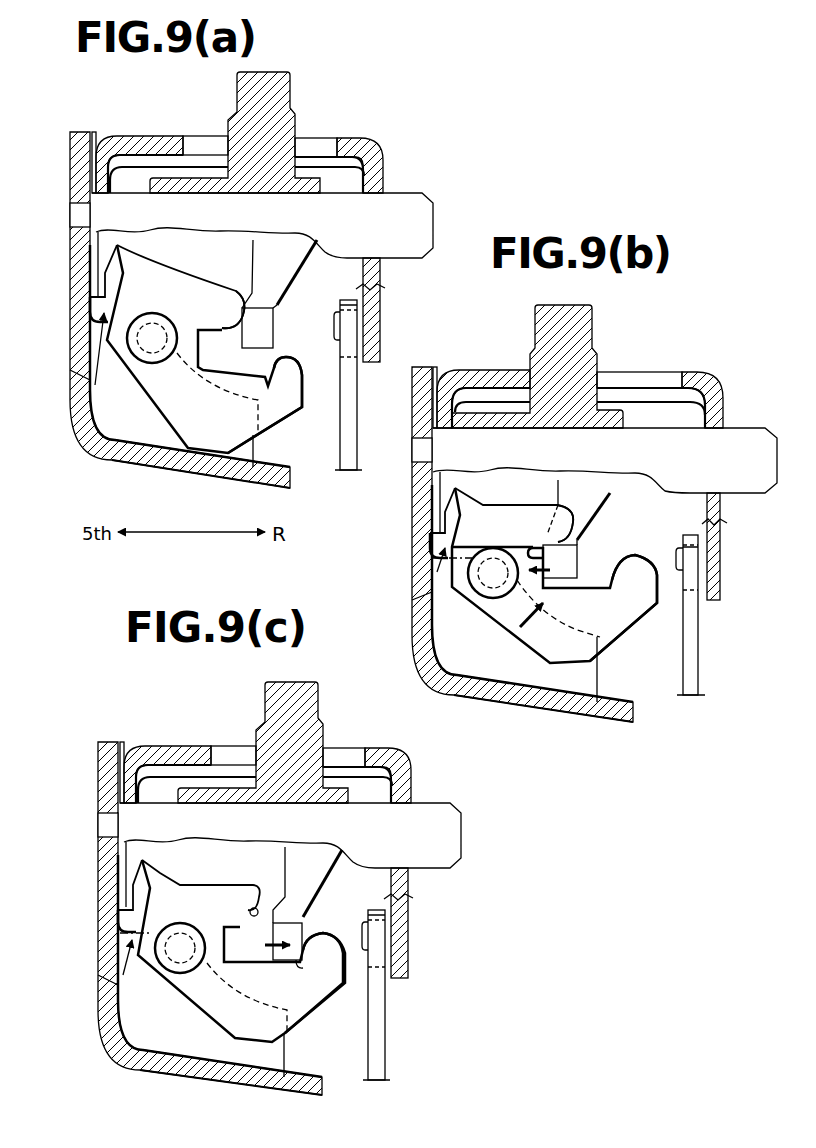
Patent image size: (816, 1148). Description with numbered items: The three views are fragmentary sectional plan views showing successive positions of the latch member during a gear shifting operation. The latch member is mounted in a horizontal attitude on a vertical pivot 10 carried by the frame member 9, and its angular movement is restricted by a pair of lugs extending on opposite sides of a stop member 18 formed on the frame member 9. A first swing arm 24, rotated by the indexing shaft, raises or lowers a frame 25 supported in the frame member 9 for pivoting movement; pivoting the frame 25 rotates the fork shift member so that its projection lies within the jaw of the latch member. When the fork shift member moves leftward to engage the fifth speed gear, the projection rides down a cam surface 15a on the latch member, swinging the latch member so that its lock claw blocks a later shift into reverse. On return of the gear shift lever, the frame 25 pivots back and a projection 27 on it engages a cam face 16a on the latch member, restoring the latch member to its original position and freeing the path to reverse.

In FIG. 9A, the frame member 9 is at (113, 464).
In FIG. 9B, the frame member 9 is at (487, 698).
In FIG. 9C, the frame member 9 is at (162, 1075).
In FIG. 9A, the vertical pivot 10 is at (143, 357).
In FIG. 9B, the vertical pivot 10 is at (478, 590).
In FIG. 9C, the vertical pivot 10 is at (172, 970).
In FIG. 9A, the cam surface 15a is at (226, 313).
In FIG. 9B, the cam surface 15a is at (565, 512).
In FIG. 9C, the cam surface 15a is at (248, 914).
In FIG. 9A, the cam face 16a is at (104, 278).
In FIG. 9B, the cam face 16a is at (443, 515).
In FIG. 9C, the cam face 16a is at (130, 892).
In FIG. 9A, the stop member 18 is at (78, 268).
In FIG. 9B, the stop member 18 is at (420, 490).
In FIG. 9C, the stop member 18 is at (100, 880).
In FIG. 9A, the first swing arm 24 is at (346, 425).
In FIG. 9B, the first swing arm 24 is at (695, 627).
In FIG. 9C, the first swing arm 24 is at (383, 1027).
In FIG. 9A, the frame 25 is at (148, 138).
In FIG. 9B, the frame 25 is at (700, 385).
In FIG. 9C, the frame 25 is at (380, 750).
In FIG. 9A, the projection 27 is at (90, 322).
In FIG. 9B, the projection 27 is at (430, 548).
In FIG. 9C, the projection 27 is at (120, 933).